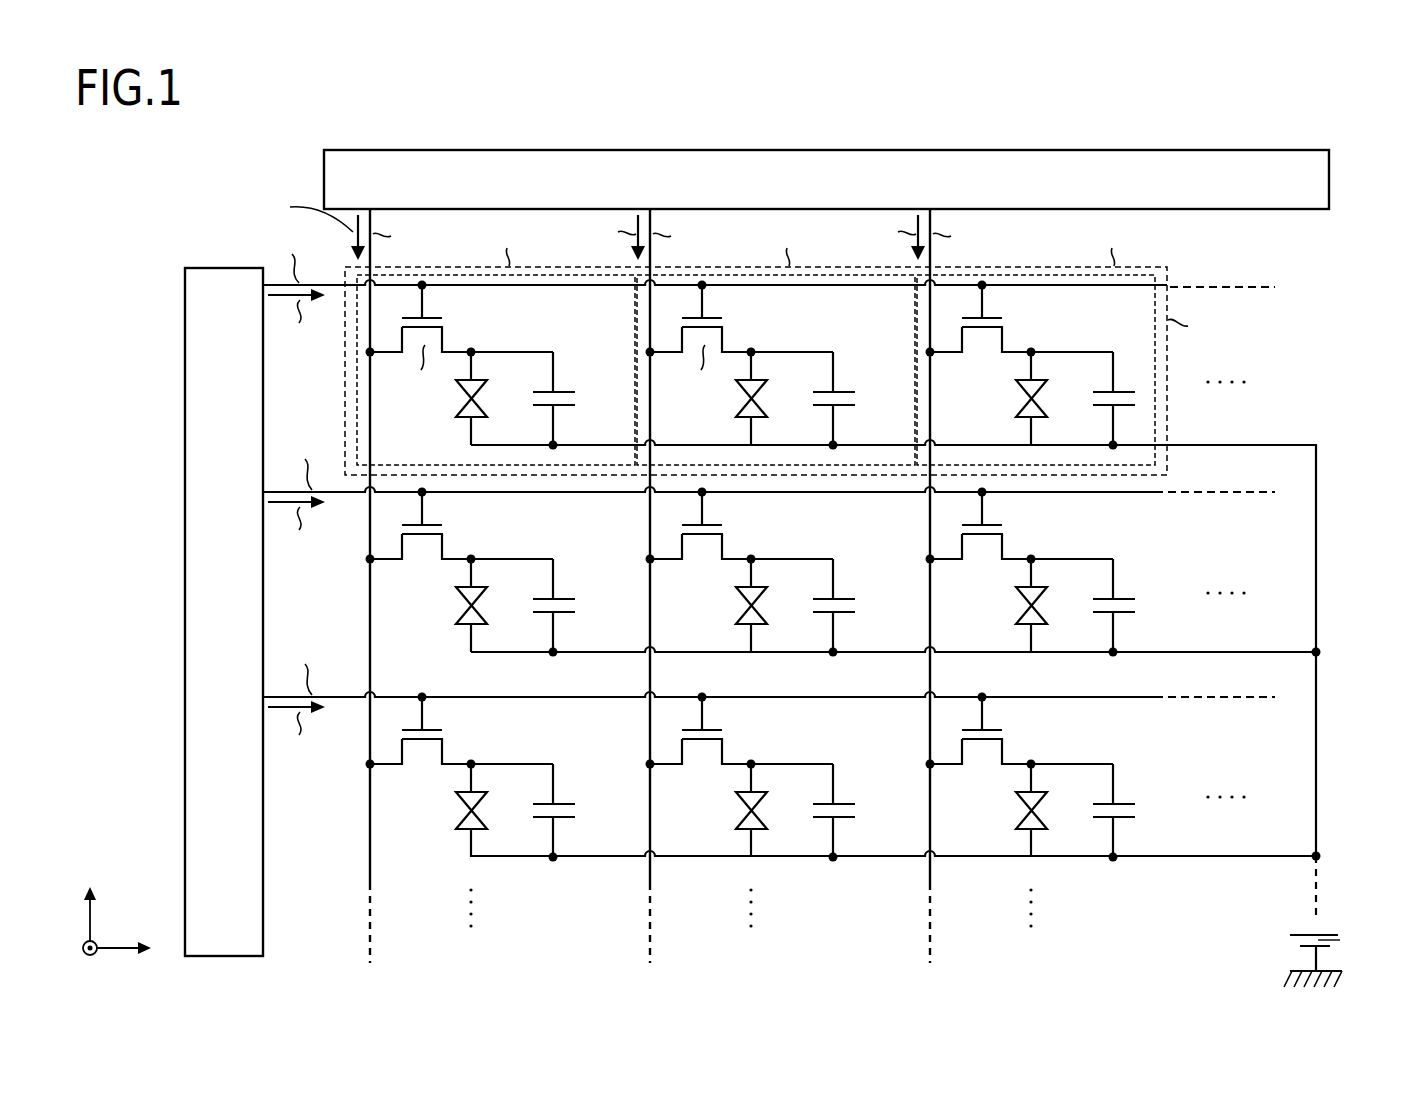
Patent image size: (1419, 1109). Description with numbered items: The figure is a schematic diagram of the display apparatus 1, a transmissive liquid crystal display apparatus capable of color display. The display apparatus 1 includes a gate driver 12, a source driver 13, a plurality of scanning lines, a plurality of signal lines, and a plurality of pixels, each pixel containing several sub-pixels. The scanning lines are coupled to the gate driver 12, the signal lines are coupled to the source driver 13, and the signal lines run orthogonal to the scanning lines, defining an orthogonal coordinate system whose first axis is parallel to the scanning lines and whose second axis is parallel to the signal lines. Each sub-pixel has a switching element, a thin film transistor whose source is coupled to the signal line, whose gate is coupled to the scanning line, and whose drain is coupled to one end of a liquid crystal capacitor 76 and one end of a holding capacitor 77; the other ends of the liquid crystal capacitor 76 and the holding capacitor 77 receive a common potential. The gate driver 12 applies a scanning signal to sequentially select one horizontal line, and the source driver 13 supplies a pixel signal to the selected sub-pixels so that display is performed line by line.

The display apparatus 1 is at (1258, 125).
The gate driver 12 is at (208, 275).
The source driver 13 is at (1330, 180).
The liquid crystal capacitor 76 is at (488, 401).
The holding capacitor 77 is at (577, 401).